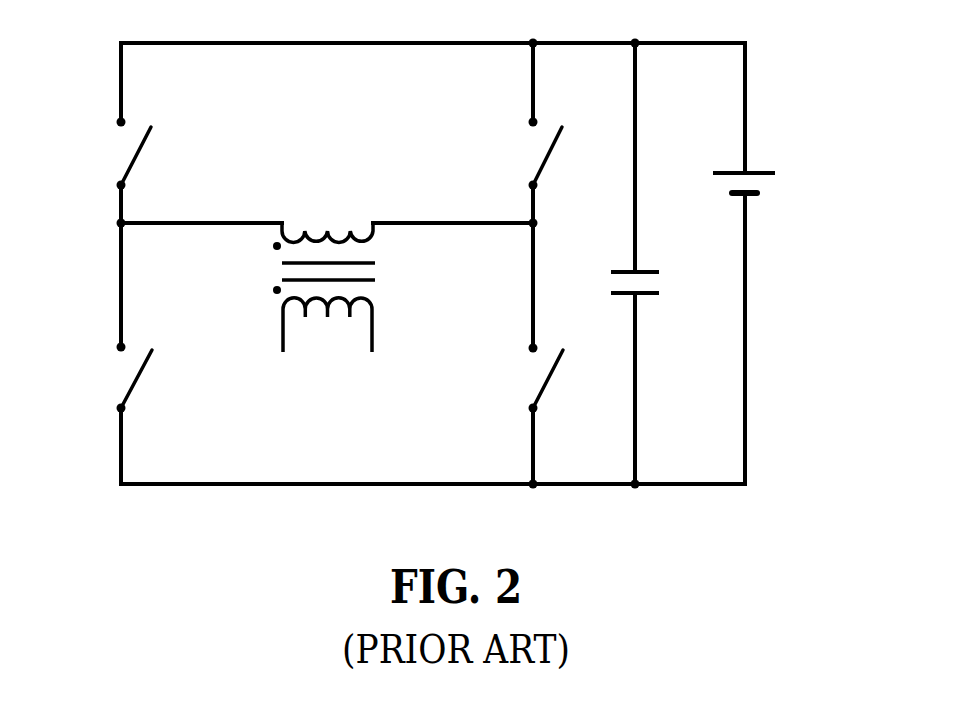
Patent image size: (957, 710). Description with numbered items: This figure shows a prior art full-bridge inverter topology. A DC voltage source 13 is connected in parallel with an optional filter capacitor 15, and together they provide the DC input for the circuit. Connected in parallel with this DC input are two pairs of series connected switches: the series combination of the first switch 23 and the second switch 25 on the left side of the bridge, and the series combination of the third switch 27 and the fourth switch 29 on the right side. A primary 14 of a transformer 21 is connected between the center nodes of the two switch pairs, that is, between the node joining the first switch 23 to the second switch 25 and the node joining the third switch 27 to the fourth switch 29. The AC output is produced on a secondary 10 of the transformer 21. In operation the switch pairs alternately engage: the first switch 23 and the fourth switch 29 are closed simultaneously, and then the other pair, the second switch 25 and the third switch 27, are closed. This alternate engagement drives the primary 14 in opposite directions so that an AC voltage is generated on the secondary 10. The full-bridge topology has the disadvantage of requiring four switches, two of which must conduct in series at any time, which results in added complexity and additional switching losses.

The secondary 10 is at (283, 325).
The voltage source 13 is at (763, 168).
The primary 14 is at (322, 222).
The filter capacitor 15 is at (647, 268).
The transformer 21 is at (377, 253).
The switch SW1 23 is at (140, 150).
The switch SW2 25 is at (137, 383).
The switch SW3 27 is at (548, 153).
The switch SW4 29 is at (550, 378).